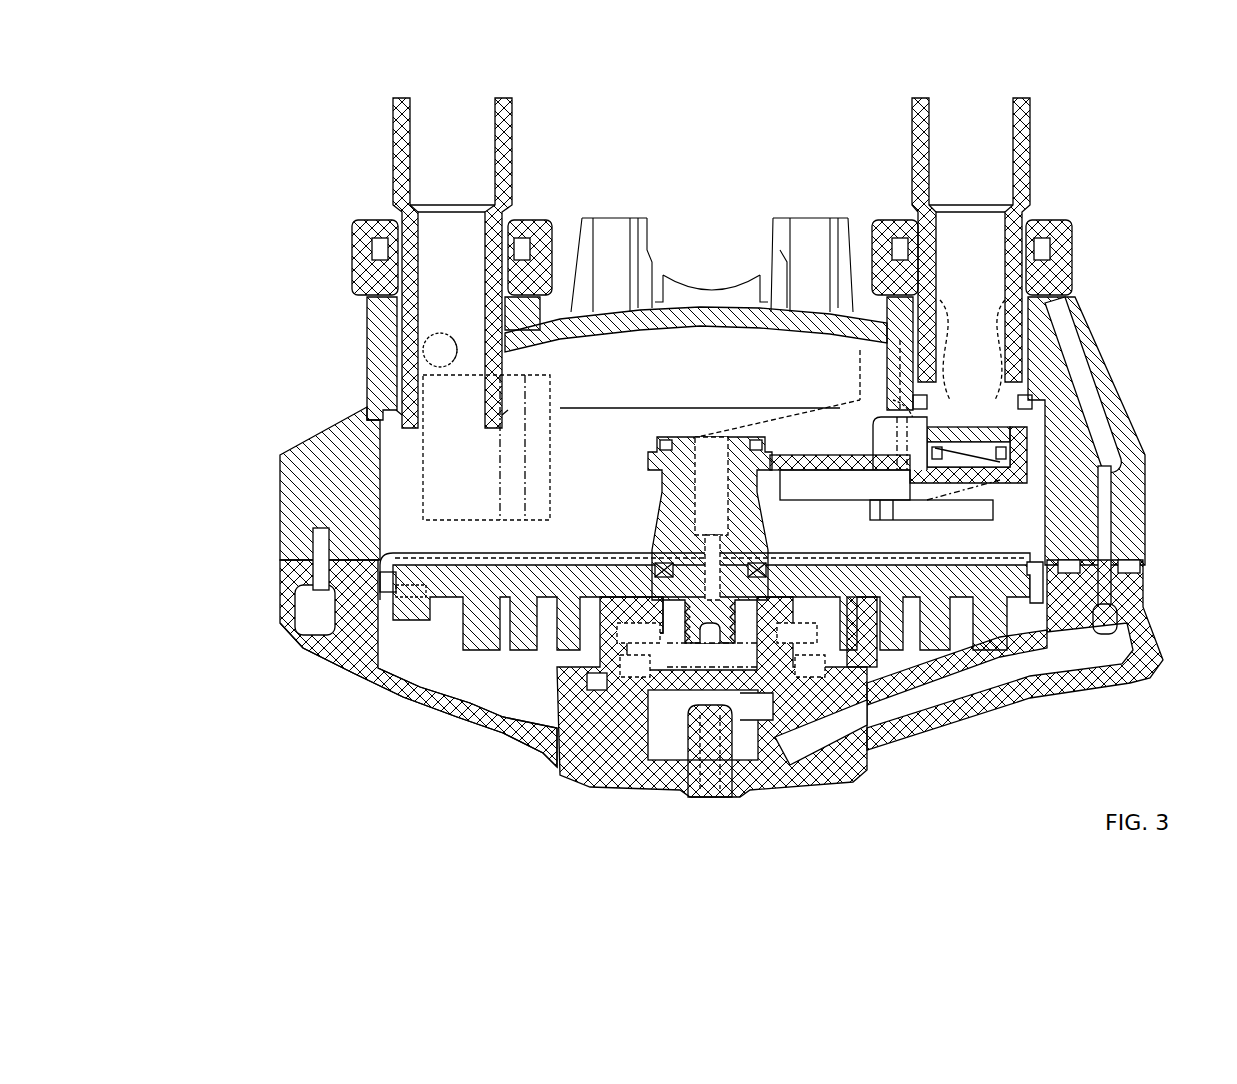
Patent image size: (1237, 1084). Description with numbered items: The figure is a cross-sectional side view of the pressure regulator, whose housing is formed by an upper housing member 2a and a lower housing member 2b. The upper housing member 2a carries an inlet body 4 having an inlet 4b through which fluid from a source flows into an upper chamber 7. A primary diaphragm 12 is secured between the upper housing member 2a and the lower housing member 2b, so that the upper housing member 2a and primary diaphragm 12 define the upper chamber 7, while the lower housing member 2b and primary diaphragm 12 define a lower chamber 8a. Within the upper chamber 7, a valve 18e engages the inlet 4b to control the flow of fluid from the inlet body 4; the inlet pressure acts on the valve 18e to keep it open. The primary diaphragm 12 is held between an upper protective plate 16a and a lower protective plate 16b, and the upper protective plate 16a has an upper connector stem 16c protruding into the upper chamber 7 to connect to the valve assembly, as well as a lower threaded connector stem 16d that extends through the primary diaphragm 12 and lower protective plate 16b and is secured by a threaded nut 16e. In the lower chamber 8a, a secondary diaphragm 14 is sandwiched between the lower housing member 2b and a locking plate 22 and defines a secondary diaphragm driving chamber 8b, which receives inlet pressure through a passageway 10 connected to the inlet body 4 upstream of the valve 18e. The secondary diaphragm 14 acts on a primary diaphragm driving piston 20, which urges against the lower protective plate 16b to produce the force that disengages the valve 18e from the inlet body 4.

The upper housing member 2a is at (303, 470).
The lower housing member 2b is at (275, 608).
The inlet body 4 is at (1030, 180).
The inlet 4b is at (965, 396).
The upper chamber 7 is at (942, 538).
The lower chamber 8a is at (526, 700).
The secondary diaphragm driving chamber 8b is at (759, 746).
The passageway 10 is at (1058, 386).
The primary diaphragm 12 is at (1040, 600).
The secondary diaphragm 14 is at (763, 722).
The upper protective plate 16a is at (448, 557).
The lower protective plate 16b is at (405, 585).
The upper connector stem 16c is at (665, 512).
The lower threaded connector stem 16d is at (705, 608).
The threaded nut 16e is at (680, 640).
The valve 18e is at (975, 455).
The primary diaphragm driving piston 20 is at (662, 678).
The locking plate 22 is at (803, 673).